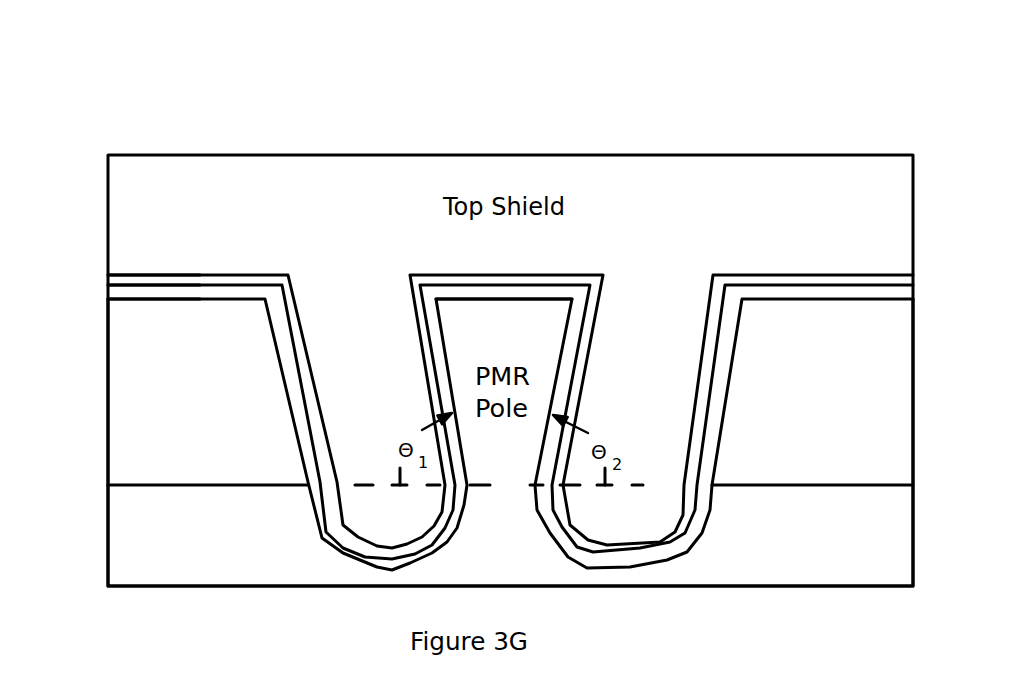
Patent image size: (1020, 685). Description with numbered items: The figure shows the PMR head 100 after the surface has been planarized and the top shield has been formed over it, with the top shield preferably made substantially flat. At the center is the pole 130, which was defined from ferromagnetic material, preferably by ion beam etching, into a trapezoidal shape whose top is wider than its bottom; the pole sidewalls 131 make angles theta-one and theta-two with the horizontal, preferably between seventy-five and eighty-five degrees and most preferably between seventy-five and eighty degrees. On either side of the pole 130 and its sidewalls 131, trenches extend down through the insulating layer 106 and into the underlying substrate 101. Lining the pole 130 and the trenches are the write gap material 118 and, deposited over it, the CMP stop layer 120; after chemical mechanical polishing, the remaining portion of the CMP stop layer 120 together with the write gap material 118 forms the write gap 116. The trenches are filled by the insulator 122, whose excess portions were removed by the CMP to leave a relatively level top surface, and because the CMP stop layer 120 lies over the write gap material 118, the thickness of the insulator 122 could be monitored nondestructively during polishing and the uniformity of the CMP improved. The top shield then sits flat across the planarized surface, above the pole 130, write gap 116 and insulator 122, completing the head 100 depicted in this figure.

The PMR head 100 is at (494, 50).
The substrate 101 is at (108, 568).
The insulating layer 106 is at (108, 468).
The write gap 116 is at (100, 300).
The write gap material 118 is at (797, 283).
The CMP stop layer 120 is at (142, 275).
The insulator 122 is at (318, 275).
The pole 130 is at (435, 140).
The pole sidewall / trench walls 131 is at (442, 357).